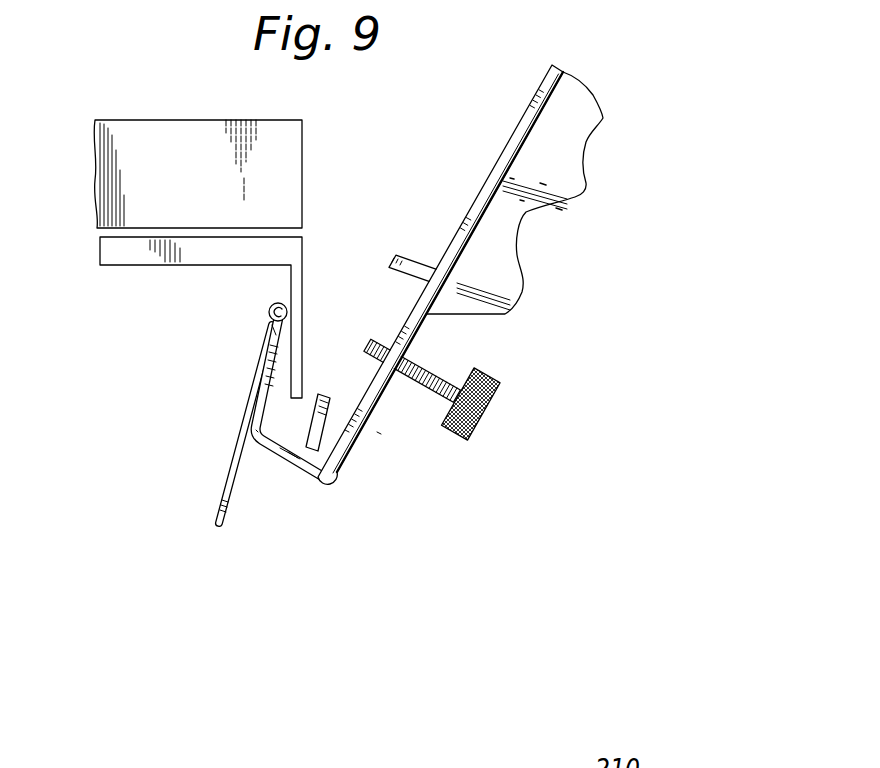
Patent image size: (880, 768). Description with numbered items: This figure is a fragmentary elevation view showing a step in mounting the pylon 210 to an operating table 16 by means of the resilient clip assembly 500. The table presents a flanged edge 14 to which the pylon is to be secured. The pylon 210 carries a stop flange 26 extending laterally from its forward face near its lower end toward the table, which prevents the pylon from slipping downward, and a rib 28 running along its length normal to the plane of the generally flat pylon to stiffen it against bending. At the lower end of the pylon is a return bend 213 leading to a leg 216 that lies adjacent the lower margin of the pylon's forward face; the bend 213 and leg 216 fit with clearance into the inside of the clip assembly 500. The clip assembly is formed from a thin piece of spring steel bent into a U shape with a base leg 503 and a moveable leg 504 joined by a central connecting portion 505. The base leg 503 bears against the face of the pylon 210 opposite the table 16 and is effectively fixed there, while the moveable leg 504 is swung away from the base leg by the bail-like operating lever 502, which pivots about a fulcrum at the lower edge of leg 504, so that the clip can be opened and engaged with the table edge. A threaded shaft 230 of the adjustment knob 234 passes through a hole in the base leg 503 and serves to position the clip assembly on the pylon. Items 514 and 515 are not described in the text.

The table flange 14 is at (292, 277).
The operating table 16 is at (145, 258).
The stop flange 26 is at (400, 257).
The rib 28 is at (580, 188).
The pylon 210 is at (565, 120).
The return bend 213 is at (355, 452).
The leg 216 is at (330, 414).
The threaded shaft 230 is at (443, 382).
The adjustment knob 234 is at (488, 397).
The clip assembly 500 is at (353, 498).
The operating lever 502 is at (222, 492).
The base leg 503 is at (375, 430).
The moveable leg 504 is at (257, 392).
The connecting portion 505 is at (280, 455).
The hook 514 is at (270, 317).
The hook end 515 is at (268, 325).